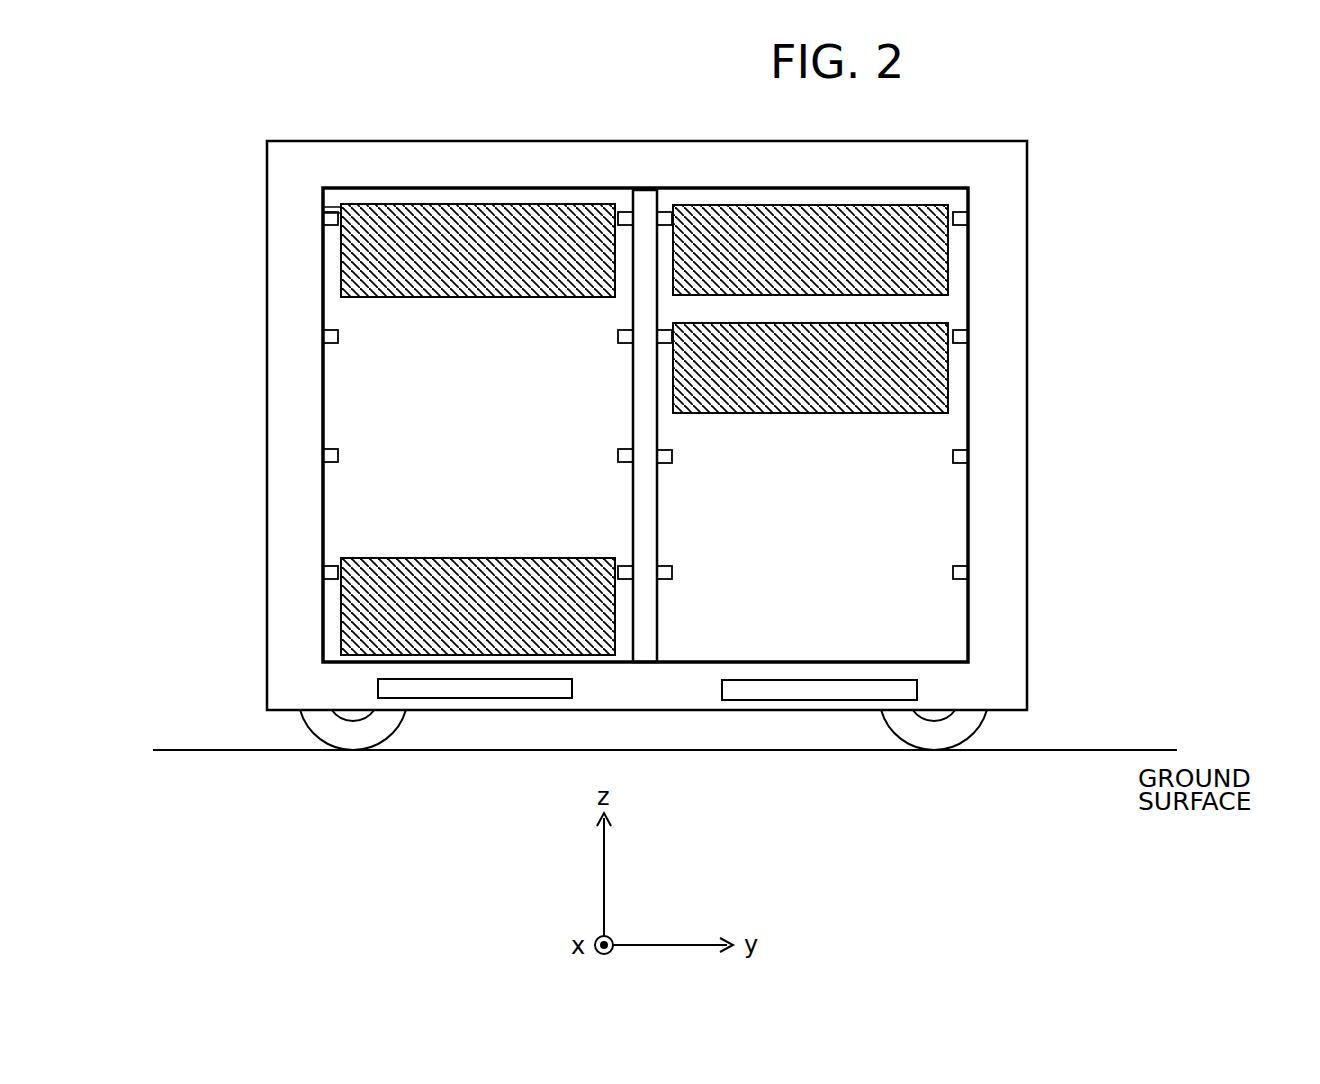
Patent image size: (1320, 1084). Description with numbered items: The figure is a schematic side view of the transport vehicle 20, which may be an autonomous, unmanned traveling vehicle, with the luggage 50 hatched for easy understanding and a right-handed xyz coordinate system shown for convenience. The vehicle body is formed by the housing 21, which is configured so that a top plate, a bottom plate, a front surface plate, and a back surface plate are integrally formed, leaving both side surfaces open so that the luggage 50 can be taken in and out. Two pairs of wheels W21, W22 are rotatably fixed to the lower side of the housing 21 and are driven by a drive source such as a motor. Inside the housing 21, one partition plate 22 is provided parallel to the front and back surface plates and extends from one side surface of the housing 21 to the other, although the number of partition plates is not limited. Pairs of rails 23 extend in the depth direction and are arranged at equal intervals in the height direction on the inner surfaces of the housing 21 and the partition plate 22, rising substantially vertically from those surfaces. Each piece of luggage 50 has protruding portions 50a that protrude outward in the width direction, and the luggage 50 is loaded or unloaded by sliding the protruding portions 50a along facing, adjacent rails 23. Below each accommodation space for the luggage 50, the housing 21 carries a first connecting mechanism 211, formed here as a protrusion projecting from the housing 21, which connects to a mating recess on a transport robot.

The transport vehicle 20 is at (216, 86).
The housing 21 is at (352, 167).
The partition plate 22 is at (647, 203).
The rails 23 is at (339, 337).
The luggage 50 is at (528, 275).
The protruding portion 50a is at (325, 207).
The first connecting mechanism 211 is at (870, 688).
The wheel W21 is at (305, 730).
The wheel W22 is at (985, 741).